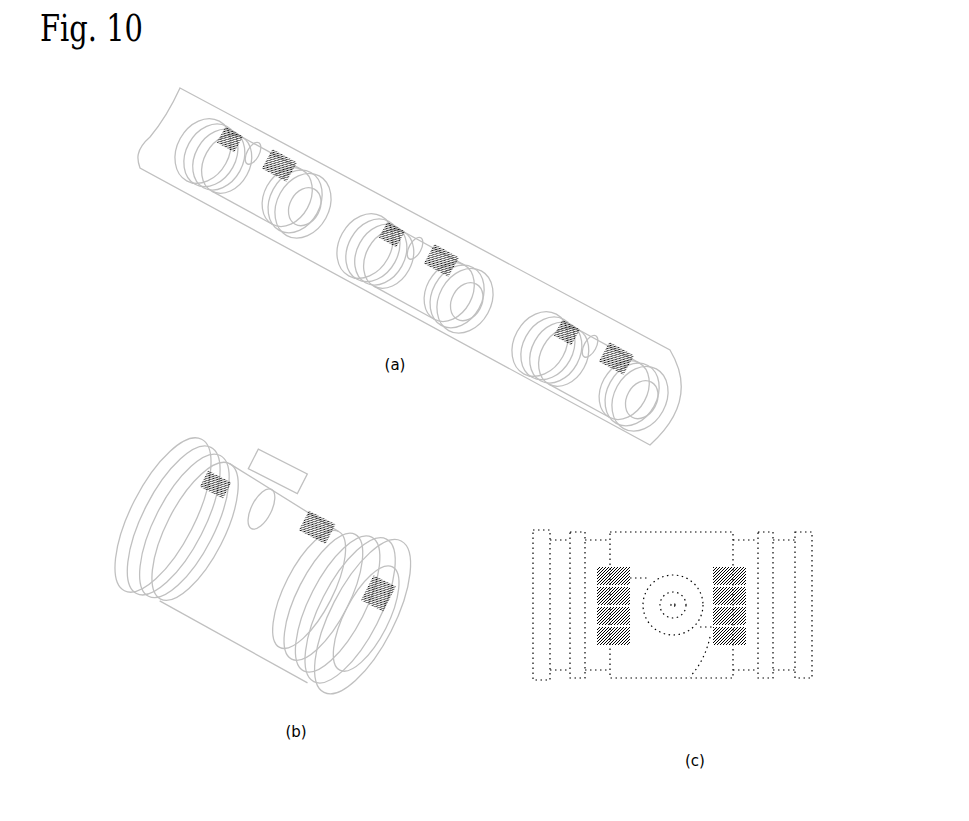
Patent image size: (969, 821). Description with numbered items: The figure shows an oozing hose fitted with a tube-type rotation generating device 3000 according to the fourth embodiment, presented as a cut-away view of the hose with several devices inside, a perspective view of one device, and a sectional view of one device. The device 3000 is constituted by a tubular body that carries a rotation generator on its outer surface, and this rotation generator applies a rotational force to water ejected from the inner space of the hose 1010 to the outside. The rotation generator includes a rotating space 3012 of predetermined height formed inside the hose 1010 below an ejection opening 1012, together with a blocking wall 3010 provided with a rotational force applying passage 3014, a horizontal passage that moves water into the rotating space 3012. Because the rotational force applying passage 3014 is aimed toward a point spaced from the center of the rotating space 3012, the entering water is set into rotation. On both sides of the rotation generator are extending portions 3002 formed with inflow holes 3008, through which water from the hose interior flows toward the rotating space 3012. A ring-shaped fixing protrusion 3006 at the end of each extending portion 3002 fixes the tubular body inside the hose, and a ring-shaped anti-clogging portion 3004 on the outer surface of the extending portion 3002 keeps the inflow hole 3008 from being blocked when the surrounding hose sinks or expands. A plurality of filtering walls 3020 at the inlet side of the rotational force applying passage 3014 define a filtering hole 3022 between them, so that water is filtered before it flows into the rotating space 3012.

The hose 1010 is at (353, 190).
The ejection opening 1012 is at (263, 137).
The tube-type rotation generating device 3000 is at (227, 112).
The extending portion 3002 is at (745, 547).
The anti-clogging portion 3004 is at (263, 653).
The fixing protrusion 3006 is at (333, 530).
The inflow hole 3008 is at (213, 460).
The blocking wall 3010 is at (310, 505).
The rotating space 3012 is at (280, 487).
The rotational force applying passage 3014 is at (635, 567).
The filtering wall 3020 is at (222, 470).
The filtering hole 3022 is at (377, 543).